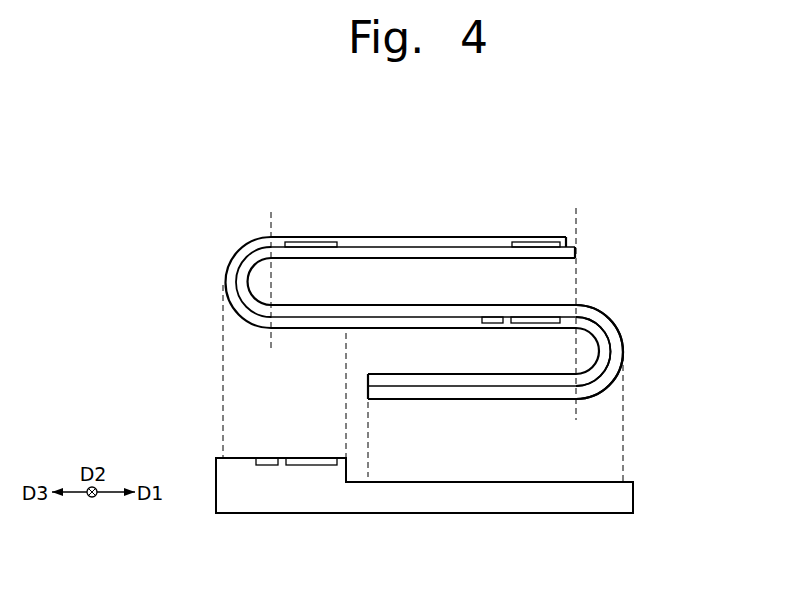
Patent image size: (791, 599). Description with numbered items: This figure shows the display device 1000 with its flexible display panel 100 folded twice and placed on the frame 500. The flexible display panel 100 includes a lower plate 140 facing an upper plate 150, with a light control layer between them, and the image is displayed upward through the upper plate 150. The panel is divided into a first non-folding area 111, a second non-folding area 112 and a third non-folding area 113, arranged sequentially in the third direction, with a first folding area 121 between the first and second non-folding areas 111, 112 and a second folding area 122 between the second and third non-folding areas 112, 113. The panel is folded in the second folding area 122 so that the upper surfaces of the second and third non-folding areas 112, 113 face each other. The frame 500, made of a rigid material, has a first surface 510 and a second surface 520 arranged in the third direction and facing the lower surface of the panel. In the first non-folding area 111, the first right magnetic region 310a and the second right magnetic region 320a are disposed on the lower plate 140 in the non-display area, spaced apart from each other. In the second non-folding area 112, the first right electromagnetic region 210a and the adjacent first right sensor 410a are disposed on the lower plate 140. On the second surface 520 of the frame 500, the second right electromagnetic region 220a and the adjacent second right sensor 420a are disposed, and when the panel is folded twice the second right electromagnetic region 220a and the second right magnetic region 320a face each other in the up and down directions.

The display device 1000 is at (668, 140).
The flexible display panel 100 is at (641, 253).
The first non-folding area 111 is at (271, 222).
The second non-folding area 112 is at (271, 342).
The third non-folding area 113 is at (576, 412).
The first folding area 121 is at (271, 222).
The second folding area 122 is at (576, 293).
The lower plate 140 is at (606, 336).
The upper plate 150 is at (611, 317).
The first right electromagnetic region 210a is at (528, 317).
The second right electromagnetic region 220a is at (313, 458).
The first right magnetic region 310a is at (535, 242).
The second right magnetic region 320a is at (313, 242).
The first right sensor 410a is at (494, 317).
The second right sensor 420a is at (268, 458).
The frame 500 is at (630, 497).
The first surface 510 is at (482, 482).
The second surface 520 is at (250, 458).